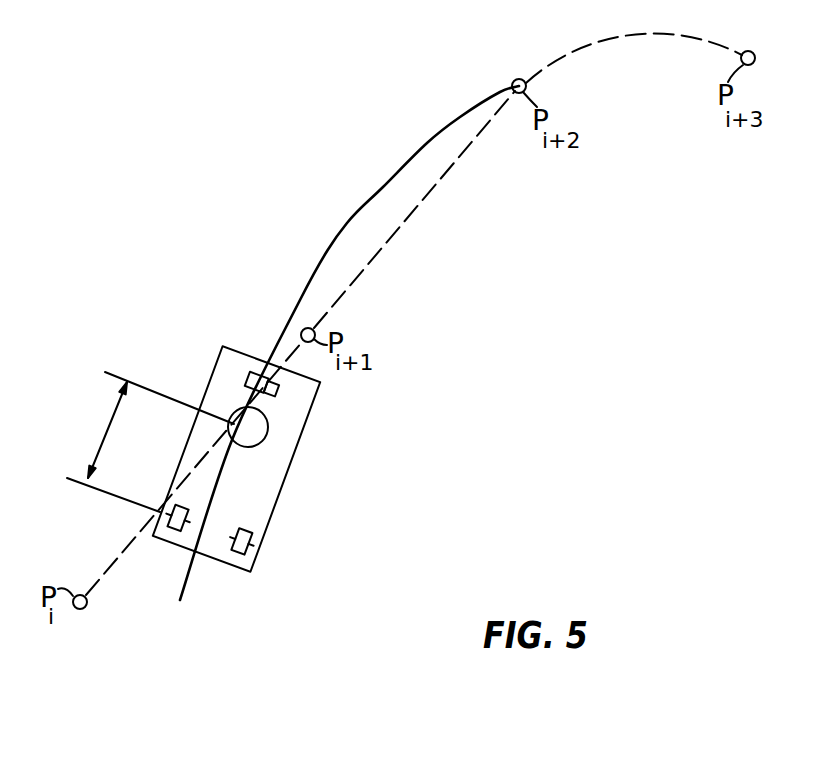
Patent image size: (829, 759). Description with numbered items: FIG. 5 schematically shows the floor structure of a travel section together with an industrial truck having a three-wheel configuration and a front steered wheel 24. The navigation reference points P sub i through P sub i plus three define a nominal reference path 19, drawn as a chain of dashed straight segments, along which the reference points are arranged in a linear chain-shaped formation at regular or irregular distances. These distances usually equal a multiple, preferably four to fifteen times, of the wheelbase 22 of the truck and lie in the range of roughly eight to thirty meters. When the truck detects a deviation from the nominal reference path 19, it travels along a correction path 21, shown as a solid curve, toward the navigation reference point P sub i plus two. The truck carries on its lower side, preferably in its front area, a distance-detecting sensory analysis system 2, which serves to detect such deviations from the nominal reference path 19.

The distance-detecting sensory analysis system 2 is at (278, 388).
The front steered wheel 24 is at (268, 428).
The correction path 21 is at (383, 189).
The nominal reference path 19 is at (355, 282).
The wheelbase 22 is at (108, 428).